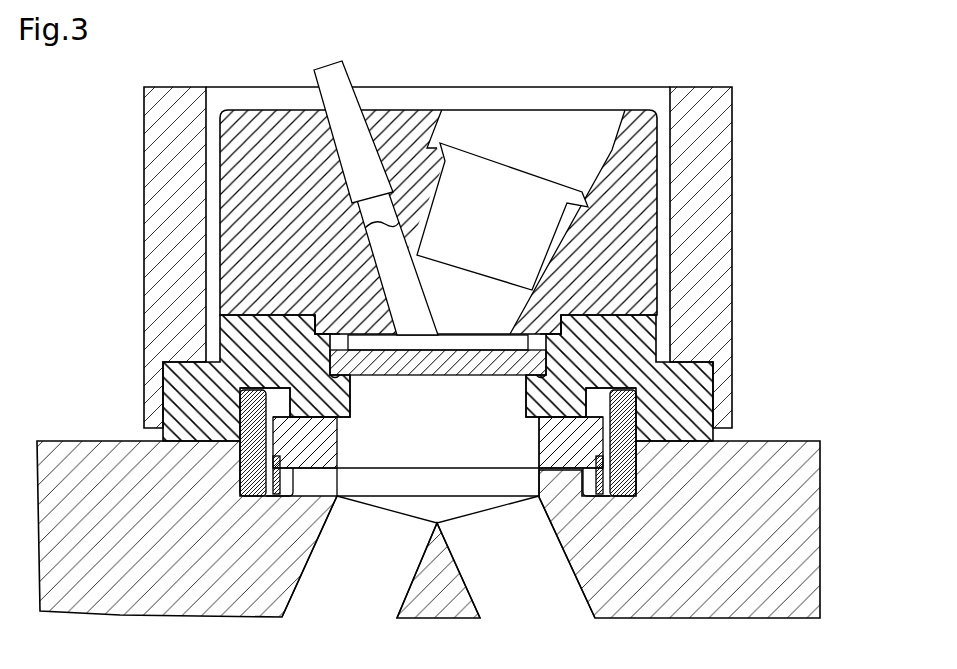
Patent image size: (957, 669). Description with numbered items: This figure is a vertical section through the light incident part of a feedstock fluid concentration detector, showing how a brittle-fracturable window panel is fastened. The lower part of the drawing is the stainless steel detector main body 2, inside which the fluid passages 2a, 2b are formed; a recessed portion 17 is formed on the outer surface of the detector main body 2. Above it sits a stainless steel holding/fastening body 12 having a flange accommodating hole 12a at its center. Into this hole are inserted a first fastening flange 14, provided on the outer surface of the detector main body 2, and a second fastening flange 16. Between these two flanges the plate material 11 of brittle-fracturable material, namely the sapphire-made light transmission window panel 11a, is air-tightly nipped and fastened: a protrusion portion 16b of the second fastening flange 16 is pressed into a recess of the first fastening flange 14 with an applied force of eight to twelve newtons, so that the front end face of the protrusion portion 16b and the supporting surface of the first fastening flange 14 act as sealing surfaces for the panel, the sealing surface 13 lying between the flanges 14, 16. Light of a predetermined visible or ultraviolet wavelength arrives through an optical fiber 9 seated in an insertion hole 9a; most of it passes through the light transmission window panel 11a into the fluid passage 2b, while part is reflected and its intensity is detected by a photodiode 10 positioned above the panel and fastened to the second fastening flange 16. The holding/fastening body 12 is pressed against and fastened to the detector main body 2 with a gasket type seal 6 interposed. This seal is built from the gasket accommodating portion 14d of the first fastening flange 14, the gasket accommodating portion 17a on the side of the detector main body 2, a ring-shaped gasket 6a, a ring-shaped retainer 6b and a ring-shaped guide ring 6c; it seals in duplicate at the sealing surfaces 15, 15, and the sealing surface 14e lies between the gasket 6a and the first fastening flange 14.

The detector main body 2 is at (95, 495).
The fluid passage 2a is at (367, 582).
The fluid passage 2b is at (513, 582).
The gasket type seal 6 is at (238, 480).
The gasket 6a is at (570, 447).
The retainer 6b is at (478, 457).
The guide ring 6c is at (627, 497).
The optical fiber 9 is at (343, 113).
The insertion hole for an optical fiber 9a is at (395, 255).
The photodiode 10 is at (510, 203).
The plate material 11 is at (463, 378).
The light transmission window panel 11a is at (428, 362).
The holding/fastening body 12 is at (703, 193).
The flange accommodating hole 12a is at (498, 97).
The sealing surface 13 is at (560, 328).
The first fastening flange 14 is at (675, 395).
The gasket accommodating portion 14d is at (597, 397).
The sealing surface 14e is at (543, 430).
The sealing surfaces 15 is at (313, 415).
The second fastening flange 16 is at (618, 230).
The protrusion portion 16b is at (333, 333).
The recessed portion 17 is at (427, 480).
The gasket accommodating portion 17a is at (290, 483).